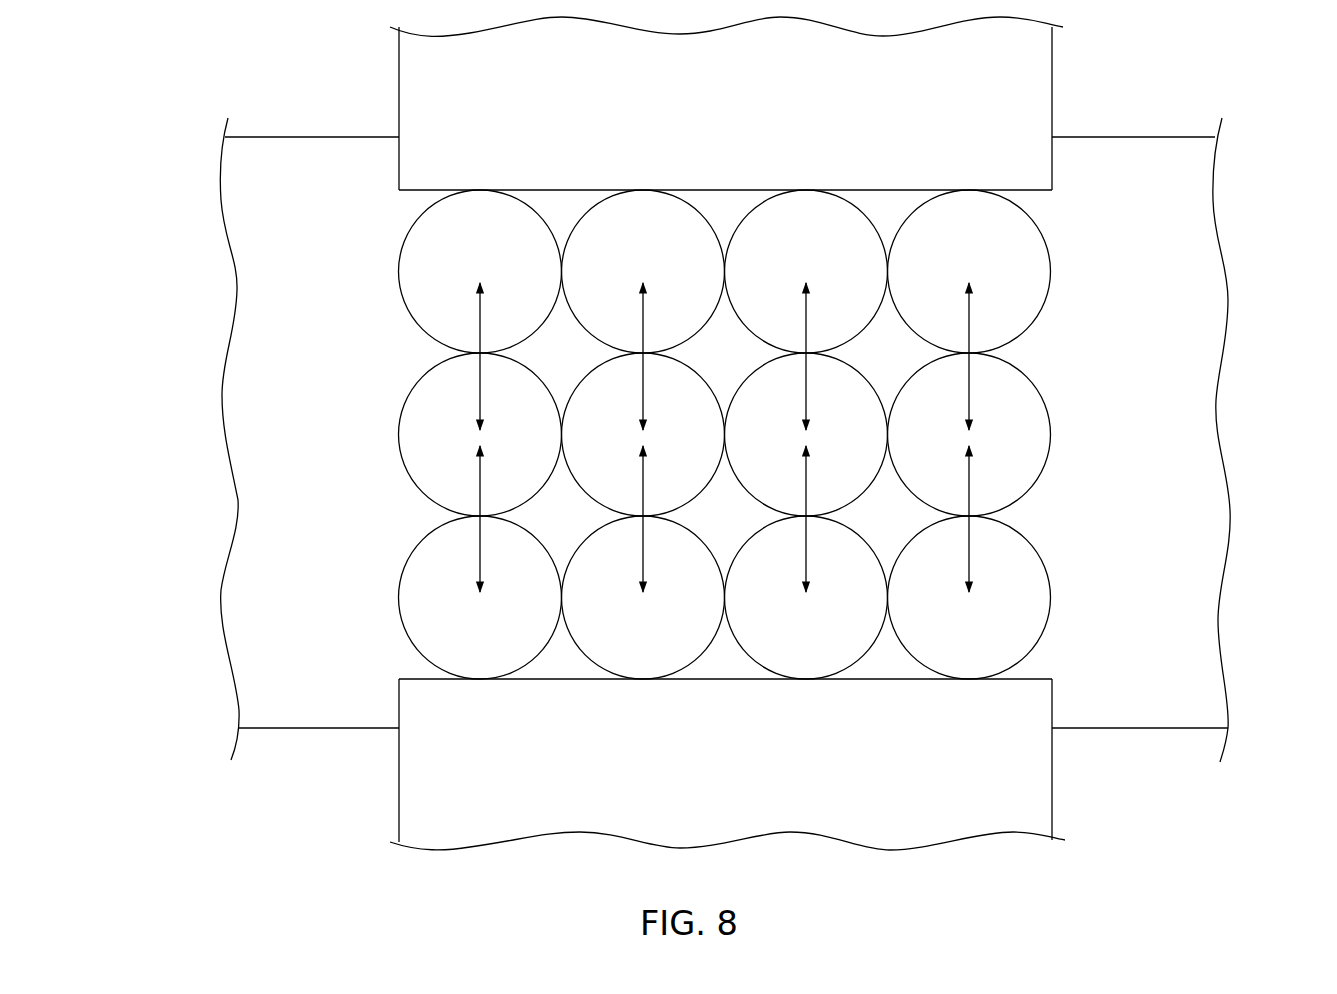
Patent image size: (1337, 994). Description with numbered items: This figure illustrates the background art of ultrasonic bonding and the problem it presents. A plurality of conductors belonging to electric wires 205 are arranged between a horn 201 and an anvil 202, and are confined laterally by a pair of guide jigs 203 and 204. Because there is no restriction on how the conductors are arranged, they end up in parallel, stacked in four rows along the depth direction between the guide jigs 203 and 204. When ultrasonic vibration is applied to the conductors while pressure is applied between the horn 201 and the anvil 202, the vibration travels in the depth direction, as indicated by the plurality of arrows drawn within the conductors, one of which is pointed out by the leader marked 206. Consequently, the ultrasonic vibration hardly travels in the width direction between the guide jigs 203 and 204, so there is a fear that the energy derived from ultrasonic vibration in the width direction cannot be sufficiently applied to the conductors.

The horn 201 is at (1053, 789).
The anvil 202 is at (1053, 53).
The guide jig 203 is at (1158, 395).
The guide jig 204 is at (247, 400).
The electric wire 205 is at (1036, 219).
The particle vibration direction 206 is at (1003, 264).